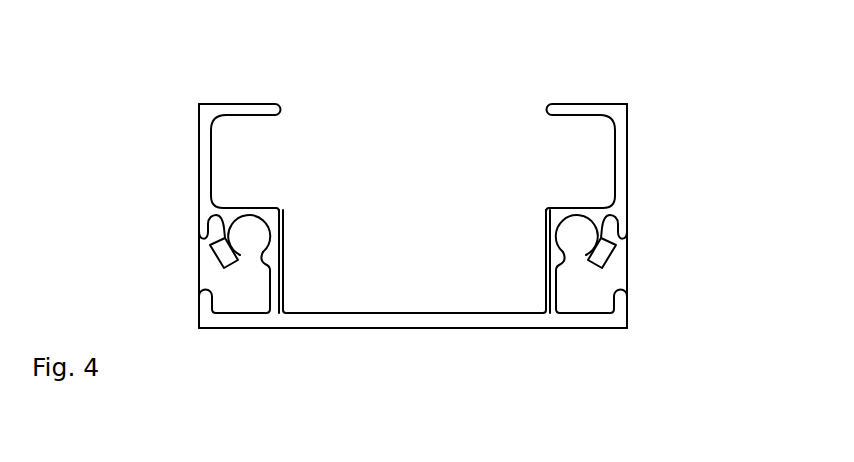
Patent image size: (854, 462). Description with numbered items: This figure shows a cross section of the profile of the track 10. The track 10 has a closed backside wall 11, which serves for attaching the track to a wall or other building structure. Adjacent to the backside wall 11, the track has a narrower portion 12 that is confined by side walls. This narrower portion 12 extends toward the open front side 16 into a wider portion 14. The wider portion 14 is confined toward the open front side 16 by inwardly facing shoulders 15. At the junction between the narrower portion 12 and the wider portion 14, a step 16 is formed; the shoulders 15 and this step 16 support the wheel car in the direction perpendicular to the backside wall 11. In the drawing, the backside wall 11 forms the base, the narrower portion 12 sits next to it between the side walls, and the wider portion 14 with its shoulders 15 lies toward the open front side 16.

The track 10 is at (628, 147).
The closed backside wall 11 is at (517, 322).
The narrower portion 12 is at (333, 281).
The wider portion 14 is at (228, 164).
The inwardly facing shoulders 15 is at (249, 103).
The open front side 16 is at (278, 207).